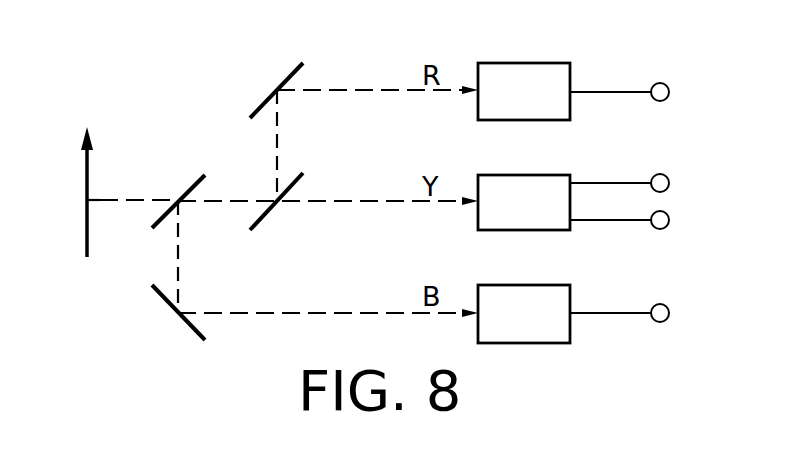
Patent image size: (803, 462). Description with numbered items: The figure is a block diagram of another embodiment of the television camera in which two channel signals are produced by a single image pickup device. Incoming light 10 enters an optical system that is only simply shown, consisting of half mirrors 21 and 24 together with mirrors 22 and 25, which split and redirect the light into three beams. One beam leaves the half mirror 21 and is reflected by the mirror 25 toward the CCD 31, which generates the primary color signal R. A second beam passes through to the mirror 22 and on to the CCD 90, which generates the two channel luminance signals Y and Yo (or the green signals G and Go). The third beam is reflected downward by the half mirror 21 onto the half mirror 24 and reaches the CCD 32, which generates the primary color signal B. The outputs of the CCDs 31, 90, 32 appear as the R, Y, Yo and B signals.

The incident light beam 10 is at (87, 232).
The half mirror 21 is at (187, 188).
The beam splitter 22 is at (268, 213).
The half mirror 24 is at (163, 302).
The mirror 25 is at (285, 78).
The CCD 31 is at (497, 63).
The CCD 32 is at (497, 285).
The CCD 90 is at (497, 175).